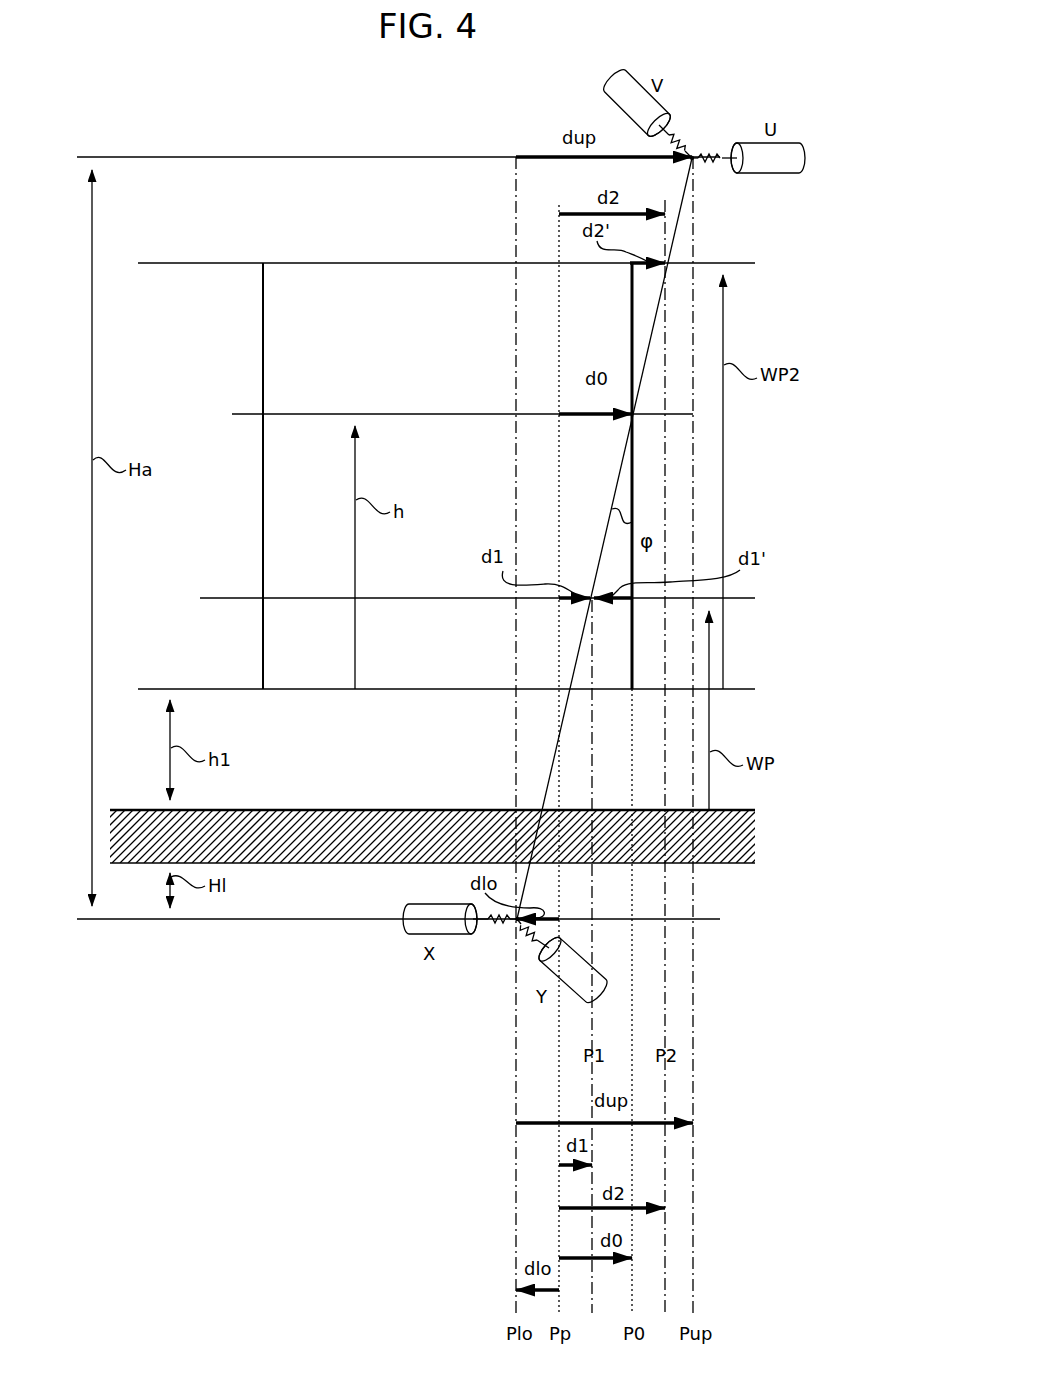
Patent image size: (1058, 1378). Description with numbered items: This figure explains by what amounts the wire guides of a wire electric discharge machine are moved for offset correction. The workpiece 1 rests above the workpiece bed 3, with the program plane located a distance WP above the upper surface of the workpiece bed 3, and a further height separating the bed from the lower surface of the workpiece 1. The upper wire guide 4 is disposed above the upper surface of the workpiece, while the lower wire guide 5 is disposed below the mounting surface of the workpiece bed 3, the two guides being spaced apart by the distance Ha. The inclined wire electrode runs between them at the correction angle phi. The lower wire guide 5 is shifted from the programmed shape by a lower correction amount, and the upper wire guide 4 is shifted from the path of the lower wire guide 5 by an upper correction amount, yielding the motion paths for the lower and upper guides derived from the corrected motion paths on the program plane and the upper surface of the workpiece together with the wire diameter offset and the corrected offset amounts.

The workpiece 1 is at (412, 254).
The workpiece bed 3 is at (333, 804).
The upper wire guide 4 is at (695, 156).
The lower wire guide 5 is at (516, 925).